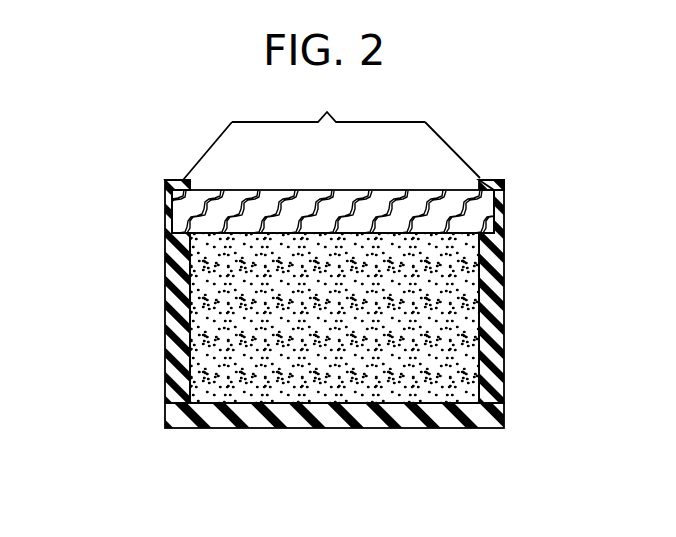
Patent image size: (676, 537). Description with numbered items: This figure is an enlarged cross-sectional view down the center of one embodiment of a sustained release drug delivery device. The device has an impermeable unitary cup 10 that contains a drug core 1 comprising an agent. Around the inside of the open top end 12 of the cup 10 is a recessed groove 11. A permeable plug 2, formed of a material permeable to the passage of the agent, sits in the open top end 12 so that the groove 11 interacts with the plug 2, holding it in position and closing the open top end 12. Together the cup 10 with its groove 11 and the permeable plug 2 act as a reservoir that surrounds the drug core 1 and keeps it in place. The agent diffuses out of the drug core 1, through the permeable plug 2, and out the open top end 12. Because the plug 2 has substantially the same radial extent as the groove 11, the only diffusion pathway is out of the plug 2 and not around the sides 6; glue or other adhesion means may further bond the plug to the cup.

The drug core 1 is at (225, 355).
The permeable plug 2 is at (259, 217).
The sides 6 is at (185, 183).
The impermeable unitary cup 10 is at (311, 428).
The recessed groove 11 is at (167, 240).
The open top end 12 is at (331, 130).